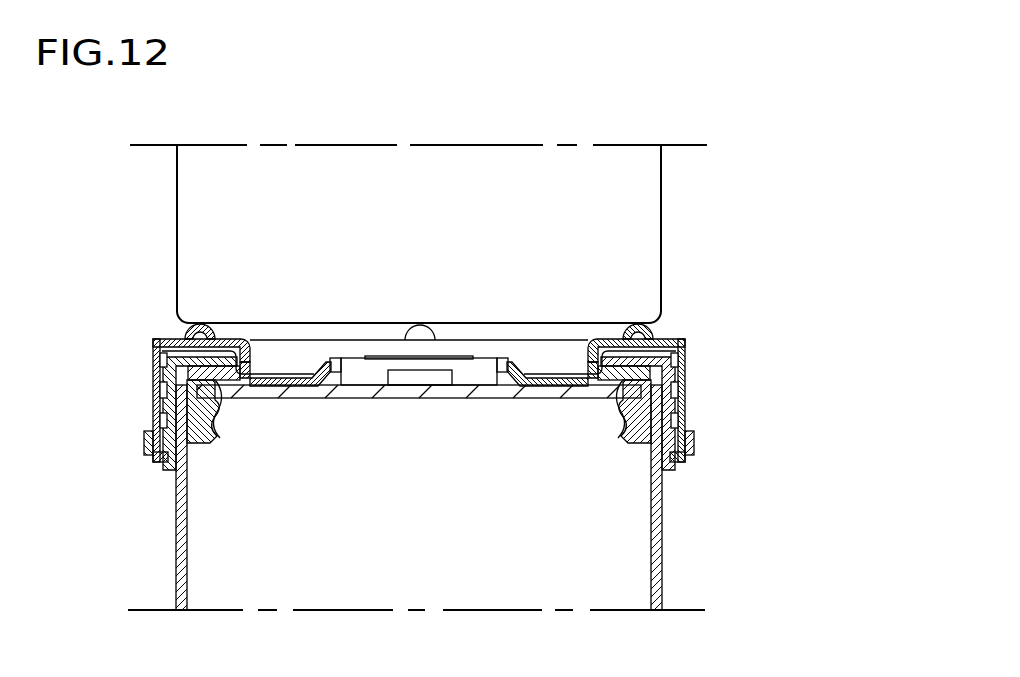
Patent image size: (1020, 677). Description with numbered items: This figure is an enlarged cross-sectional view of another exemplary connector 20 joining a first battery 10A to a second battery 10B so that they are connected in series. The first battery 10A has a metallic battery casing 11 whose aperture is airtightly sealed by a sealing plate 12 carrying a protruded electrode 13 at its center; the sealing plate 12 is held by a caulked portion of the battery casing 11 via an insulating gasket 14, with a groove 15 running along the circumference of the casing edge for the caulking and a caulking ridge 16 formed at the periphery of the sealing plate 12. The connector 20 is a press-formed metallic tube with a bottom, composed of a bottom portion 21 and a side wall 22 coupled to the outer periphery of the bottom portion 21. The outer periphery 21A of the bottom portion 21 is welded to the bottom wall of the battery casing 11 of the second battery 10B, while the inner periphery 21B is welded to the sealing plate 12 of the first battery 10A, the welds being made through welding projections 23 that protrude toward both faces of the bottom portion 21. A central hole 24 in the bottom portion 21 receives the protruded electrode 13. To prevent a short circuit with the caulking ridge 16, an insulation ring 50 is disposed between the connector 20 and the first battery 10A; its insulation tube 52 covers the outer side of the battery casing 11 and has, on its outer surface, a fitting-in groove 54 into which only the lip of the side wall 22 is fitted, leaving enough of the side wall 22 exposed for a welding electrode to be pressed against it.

The first battery 10A is at (697, 580).
The second battery 10B is at (697, 198).
The battery casing 11 is at (435, 212).
The sealing plate 12 is at (507, 389).
The protruded electrode 13 is at (445, 330).
The gasket 14 is at (628, 437).
The groove 15 is at (684, 457).
The caulking ridge 16 is at (610, 400).
The connector 20 is at (468, 379).
The bottom portion 21 is at (419, 279).
The outer periphery 21A is at (237, 340).
The inner periphery 21B is at (313, 340).
The side wall 22 is at (152, 350).
The welding projections 23 is at (203, 332).
The central hole 24 is at (337, 357).
The insulation ring 50 is at (175, 327).
The insulation tube 52 is at (152, 395).
The fitting-in groove 54 is at (148, 453).